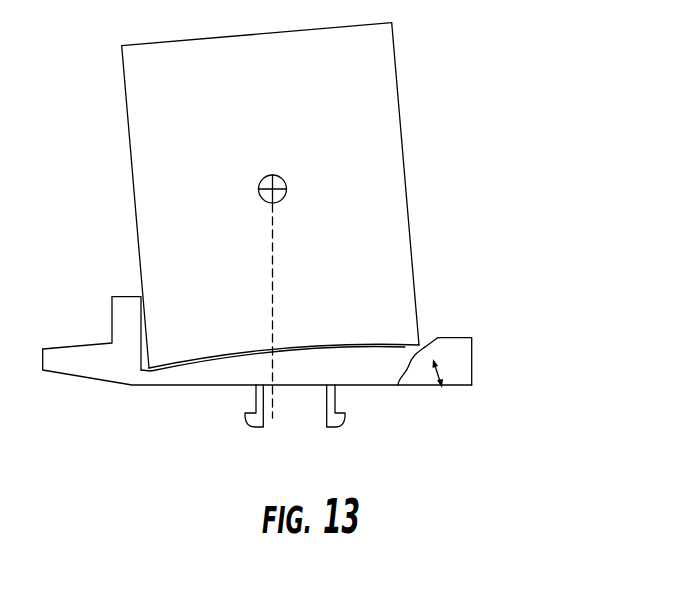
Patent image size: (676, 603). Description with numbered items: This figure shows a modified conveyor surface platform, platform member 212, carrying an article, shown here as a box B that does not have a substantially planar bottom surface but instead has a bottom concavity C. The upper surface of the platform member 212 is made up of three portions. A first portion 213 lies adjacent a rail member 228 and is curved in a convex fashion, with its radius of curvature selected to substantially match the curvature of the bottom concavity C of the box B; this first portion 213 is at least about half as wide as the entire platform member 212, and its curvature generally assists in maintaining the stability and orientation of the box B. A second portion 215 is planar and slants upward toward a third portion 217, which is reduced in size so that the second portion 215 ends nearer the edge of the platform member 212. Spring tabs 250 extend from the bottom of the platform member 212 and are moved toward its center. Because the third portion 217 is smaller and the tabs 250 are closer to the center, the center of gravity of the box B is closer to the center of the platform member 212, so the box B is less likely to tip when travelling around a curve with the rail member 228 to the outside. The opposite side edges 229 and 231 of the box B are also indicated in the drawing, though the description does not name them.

The blade B is at (378, 153).
The first edge of blade 229 is at (138, 232).
The second edge of blade 231 is at (412, 235).
The upright support wall 228 is at (132, 323).
The base support surface 213 is at (232, 360).
The detail region C is at (204, 357).
The mounting legs 250 is at (265, 405).
The clamp block 212 is at (482, 356).
The chamfered surface 217 is at (452, 338).
The gap 215 is at (398, 385).